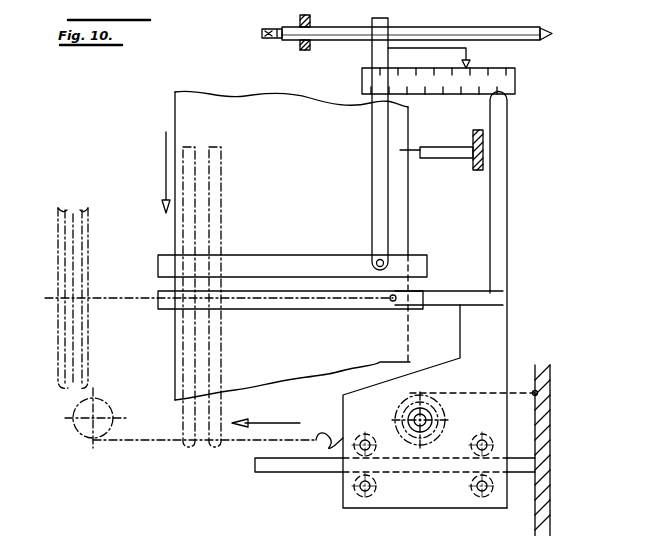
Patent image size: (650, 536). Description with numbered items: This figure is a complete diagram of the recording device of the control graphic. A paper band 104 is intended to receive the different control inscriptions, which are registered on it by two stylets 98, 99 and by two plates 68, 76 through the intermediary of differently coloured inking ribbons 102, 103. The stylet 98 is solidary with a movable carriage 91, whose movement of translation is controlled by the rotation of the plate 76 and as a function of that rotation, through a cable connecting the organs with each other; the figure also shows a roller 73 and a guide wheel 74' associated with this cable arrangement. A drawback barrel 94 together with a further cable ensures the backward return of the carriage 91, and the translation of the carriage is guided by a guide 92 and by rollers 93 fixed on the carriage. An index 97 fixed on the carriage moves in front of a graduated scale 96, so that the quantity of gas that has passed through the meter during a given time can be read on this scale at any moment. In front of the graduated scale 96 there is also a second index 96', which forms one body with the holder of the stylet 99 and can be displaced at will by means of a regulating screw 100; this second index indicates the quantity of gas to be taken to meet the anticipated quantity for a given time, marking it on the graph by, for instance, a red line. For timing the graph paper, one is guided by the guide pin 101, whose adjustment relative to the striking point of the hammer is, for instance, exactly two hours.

The regulating screw 100 is at (336, 23).
The second index 96' is at (449, 57).
The graduated scale 96 is at (453, 81).
The index 97 is at (497, 170).
The guide pin 101 is at (448, 158).
The paper band 104 is at (175, 104).
The plate 76 is at (188, 148).
The plate 68 is at (219, 154).
The stylet 99 is at (376, 259).
The inking ribbon 103 is at (292, 266).
The inking ribbon 102 is at (330, 300).
The stylet 98 is at (391, 302).
The roller 73 is at (86, 350).
The guide wheel 74' is at (190, 418).
The movable carriage 91 is at (492, 342).
The drawback barrel 94 is at (436, 416).
The rollers 93 is at (370, 498).
The guide 92 is at (294, 474).